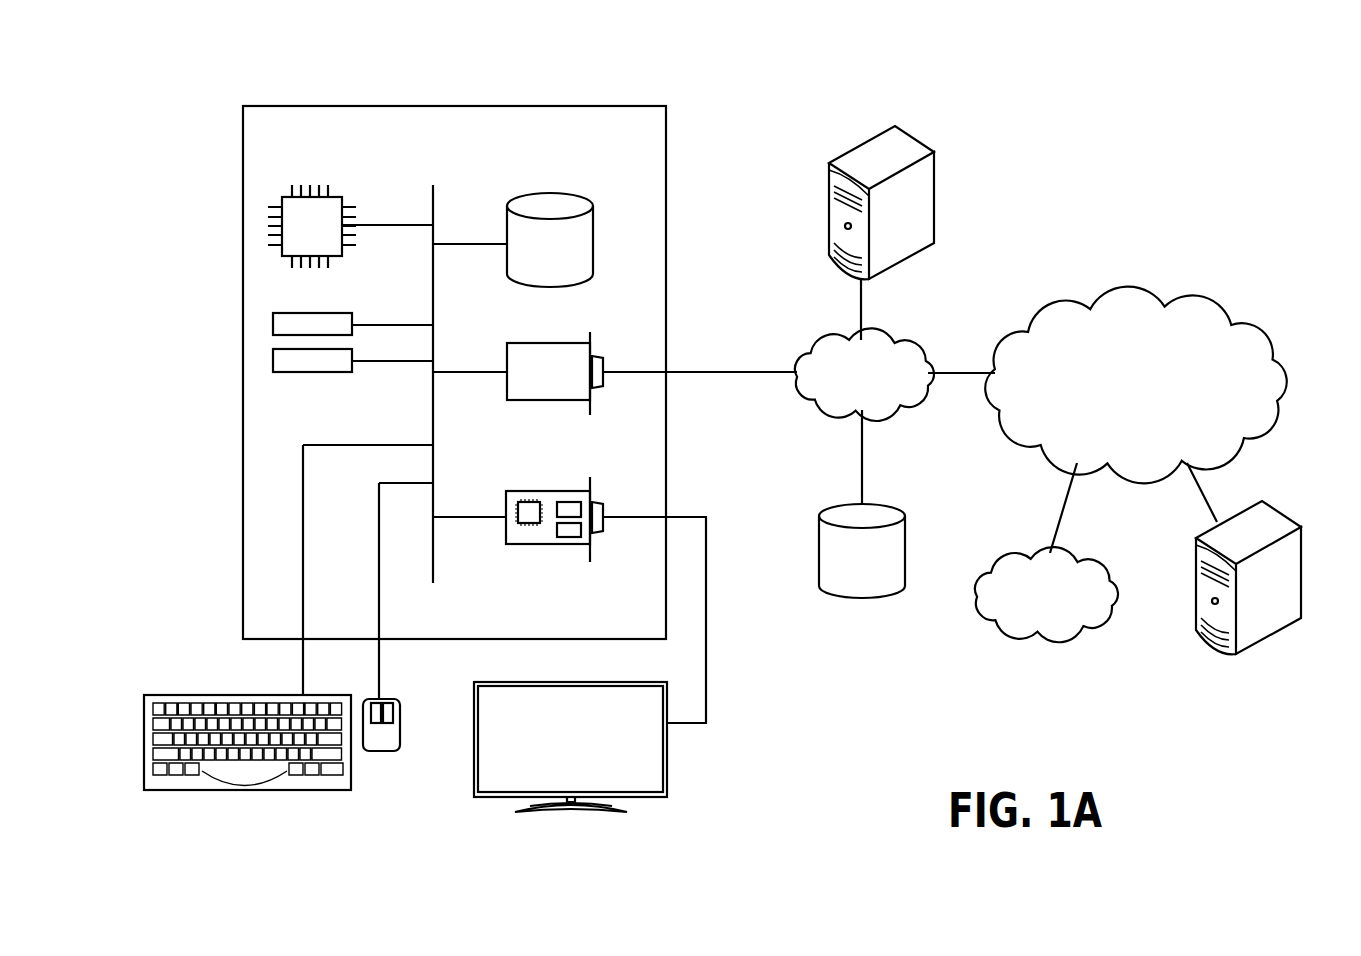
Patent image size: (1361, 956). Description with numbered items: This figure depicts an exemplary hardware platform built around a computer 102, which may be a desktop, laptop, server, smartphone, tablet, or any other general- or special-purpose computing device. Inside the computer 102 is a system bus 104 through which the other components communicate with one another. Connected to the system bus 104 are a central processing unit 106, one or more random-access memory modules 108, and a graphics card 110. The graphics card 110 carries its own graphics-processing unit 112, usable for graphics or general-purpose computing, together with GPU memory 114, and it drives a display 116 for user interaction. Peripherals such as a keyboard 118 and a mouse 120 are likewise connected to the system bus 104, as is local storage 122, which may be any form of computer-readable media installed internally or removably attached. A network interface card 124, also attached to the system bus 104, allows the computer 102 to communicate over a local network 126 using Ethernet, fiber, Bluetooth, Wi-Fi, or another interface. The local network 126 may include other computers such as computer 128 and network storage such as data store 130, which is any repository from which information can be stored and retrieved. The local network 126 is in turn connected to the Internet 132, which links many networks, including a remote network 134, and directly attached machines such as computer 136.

The computer 102 is at (620, 106).
The system bus 104 is at (434, 196).
The central processing unit (CPU) 106 is at (336, 197).
The random-access memory (RAM) modules 108 is at (352, 322).
The graphics card 110 is at (505, 503).
The graphics-processing unit (GPU) 112 is at (530, 518).
The GPU memory 114 is at (567, 533).
The display 116 is at (667, 777).
The keyboard 118 is at (250, 792).
The mouse 120 is at (378, 752).
The local storage 122 is at (595, 227).
The network interface card (NIC) 124 is at (507, 347).
The local network 126 is at (917, 328).
The computer 128 is at (918, 133).
The data store 130 is at (895, 507).
The Internet 132 is at (1182, 292).
The remote network 134 is at (1102, 548).
The computer 136 is at (1262, 558).